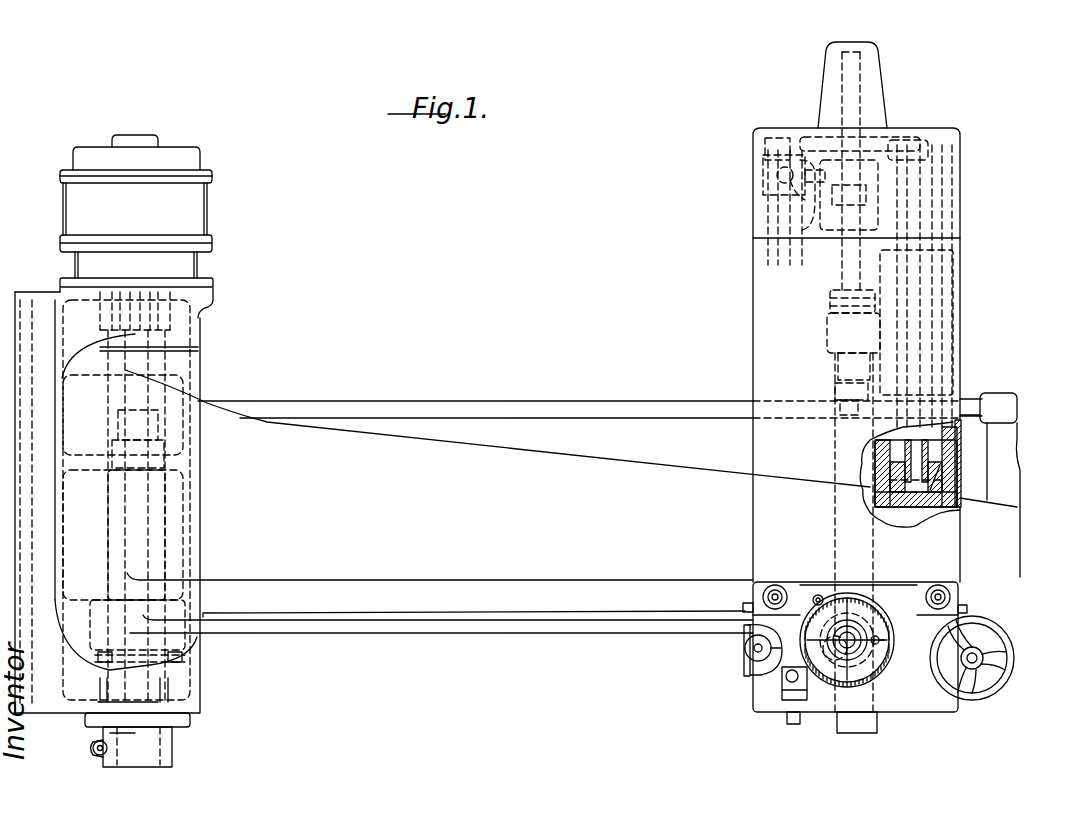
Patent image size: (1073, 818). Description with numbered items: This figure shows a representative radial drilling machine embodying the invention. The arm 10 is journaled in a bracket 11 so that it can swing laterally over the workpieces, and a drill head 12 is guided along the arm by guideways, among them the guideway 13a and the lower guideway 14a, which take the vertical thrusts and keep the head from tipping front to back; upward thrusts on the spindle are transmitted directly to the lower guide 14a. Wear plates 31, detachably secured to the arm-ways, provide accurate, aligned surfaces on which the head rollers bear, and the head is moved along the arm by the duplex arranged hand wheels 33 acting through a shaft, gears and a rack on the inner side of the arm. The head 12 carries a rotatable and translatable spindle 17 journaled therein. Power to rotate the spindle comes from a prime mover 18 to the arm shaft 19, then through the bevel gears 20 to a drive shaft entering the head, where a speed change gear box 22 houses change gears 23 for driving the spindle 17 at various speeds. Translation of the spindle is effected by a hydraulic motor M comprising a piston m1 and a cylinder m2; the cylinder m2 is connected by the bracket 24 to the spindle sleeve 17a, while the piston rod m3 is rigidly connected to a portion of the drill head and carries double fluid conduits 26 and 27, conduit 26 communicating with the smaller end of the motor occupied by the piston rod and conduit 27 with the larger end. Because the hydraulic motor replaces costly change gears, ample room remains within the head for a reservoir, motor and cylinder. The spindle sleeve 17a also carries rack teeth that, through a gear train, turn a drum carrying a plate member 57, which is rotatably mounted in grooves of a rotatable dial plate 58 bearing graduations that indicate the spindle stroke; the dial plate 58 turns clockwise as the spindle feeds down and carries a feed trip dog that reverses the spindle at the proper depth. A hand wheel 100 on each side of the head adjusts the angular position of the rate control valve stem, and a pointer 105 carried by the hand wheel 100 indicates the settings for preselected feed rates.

The arm 10 is at (571, 441).
The bracket 11 is at (197, 688).
The drill head 12 is at (751, 314).
The guideway 13a is at (602, 614).
The lower guideway 14a is at (593, 634).
The spindle 17 is at (877, 733).
The spindle sleeve 17a is at (874, 558).
The prime mover 18 is at (136, 226).
The arm shaft 19 is at (386, 400).
The bevel gears 20 is at (836, 391).
The speed change gear box 22 is at (961, 162).
The change gears 23 is at (832, 228).
The bracket 24 is at (826, 322).
The fluid conduit 26 is at (895, 458).
The fluid conduit 27 is at (905, 490).
The wear plates 31 is at (480, 612).
The hand wheels 33 is at (1010, 684).
The plate member 57 is at (868, 620).
The dial plate 58 is at (882, 664).
The hand wheel 100 is at (752, 655).
The pointer 105 is at (753, 678).
The hydraulic motor M is at (956, 286).
The piston m1 is at (945, 477).
The cylinder m2 is at (922, 442).
The piston rod m3 is at (932, 453).